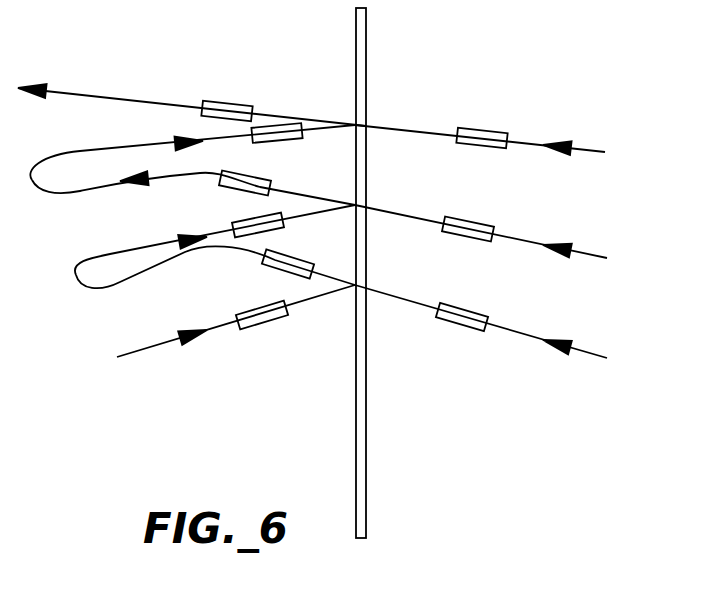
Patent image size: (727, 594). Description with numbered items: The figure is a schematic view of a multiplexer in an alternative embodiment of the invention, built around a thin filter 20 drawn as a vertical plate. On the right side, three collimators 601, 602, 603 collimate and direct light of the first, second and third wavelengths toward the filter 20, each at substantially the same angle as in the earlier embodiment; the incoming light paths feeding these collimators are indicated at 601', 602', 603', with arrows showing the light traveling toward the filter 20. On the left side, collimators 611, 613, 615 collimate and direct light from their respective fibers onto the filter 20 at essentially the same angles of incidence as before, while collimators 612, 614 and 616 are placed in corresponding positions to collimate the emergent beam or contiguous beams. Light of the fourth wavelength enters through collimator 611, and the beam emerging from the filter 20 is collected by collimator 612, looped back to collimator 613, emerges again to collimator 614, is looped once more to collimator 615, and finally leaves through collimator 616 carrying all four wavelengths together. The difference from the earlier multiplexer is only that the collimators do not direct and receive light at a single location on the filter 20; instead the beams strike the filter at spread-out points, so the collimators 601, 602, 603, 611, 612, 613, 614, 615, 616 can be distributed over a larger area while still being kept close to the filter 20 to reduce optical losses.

The transparent slab / substrate 20 is at (367, 482).
The collimator 601 is at (480, 122).
The collimator 602 is at (481, 219).
The collimator 603 is at (481, 312).
The first input beam λ1 601' is at (606, 152).
The second input beam λ2 602' is at (606, 253).
The third input beam λ3 603' is at (604, 355).
The collimator 611 is at (268, 325).
The collimator 612 is at (273, 275).
The collimator 613 is at (248, 237).
The collimator 614 is at (233, 192).
The collimator 615 is at (270, 142).
The collimator 616 is at (242, 102).